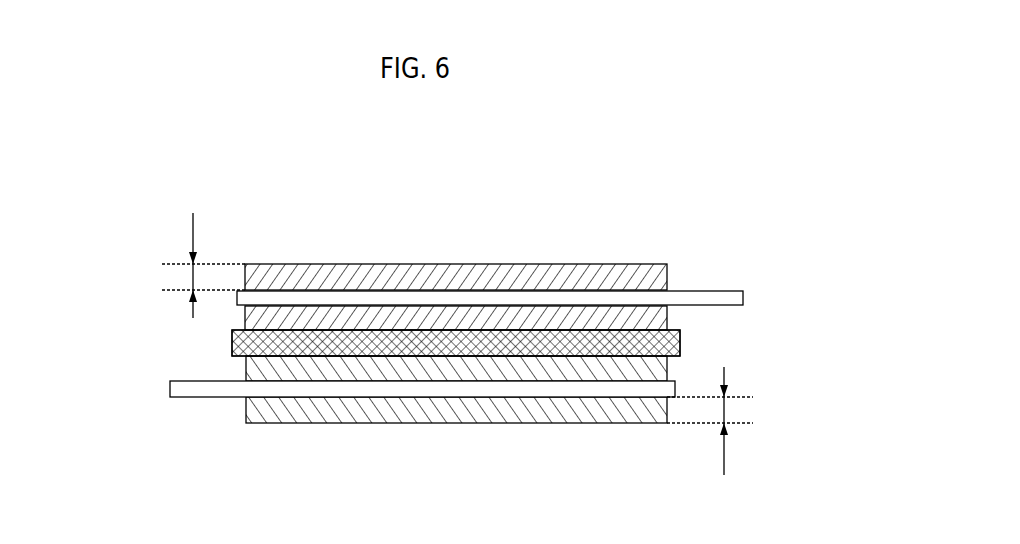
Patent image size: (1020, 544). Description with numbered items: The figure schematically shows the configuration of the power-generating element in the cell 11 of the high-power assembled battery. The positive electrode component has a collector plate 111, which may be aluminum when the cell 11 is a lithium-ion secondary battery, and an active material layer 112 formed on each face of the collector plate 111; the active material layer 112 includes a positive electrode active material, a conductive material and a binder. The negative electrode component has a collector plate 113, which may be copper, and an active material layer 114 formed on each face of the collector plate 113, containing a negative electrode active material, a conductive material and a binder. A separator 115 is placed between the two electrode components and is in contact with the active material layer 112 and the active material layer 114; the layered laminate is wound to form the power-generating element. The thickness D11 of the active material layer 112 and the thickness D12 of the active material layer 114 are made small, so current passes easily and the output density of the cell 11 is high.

The cell 11 is at (784, 221).
The collector plate 111 is at (708, 297).
The active material layer 112 is at (434, 318).
The collector plate 113 is at (208, 391).
The active material layer 114 is at (503, 373).
The separator 115 is at (682, 345).
The thickness of the active material layer D11 is at (197, 265).
The thickness of the active material layer D12 is at (715, 421).